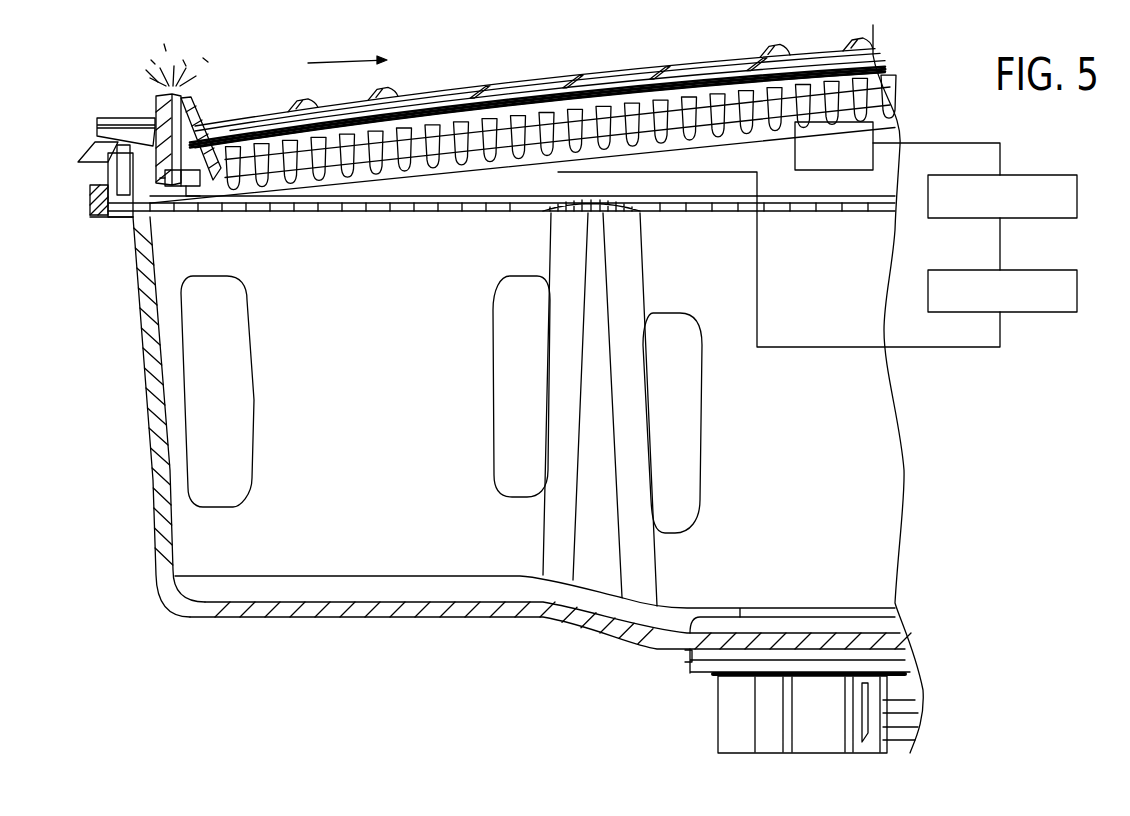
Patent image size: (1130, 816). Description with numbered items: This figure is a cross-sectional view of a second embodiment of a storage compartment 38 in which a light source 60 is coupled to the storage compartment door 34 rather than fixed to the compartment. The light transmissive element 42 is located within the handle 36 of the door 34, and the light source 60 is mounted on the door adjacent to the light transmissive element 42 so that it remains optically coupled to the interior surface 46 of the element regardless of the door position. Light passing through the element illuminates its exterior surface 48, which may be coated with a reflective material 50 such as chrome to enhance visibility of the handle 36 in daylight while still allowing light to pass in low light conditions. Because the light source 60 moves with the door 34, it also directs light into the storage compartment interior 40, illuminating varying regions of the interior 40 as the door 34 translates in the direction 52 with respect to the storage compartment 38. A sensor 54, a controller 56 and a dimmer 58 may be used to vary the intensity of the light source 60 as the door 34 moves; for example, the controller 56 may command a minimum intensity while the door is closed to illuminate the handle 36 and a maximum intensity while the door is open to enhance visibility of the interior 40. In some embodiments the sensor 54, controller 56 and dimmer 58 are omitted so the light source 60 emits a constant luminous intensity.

The storage compartment door 34 is at (430, 127).
The handle 36 is at (192, 100).
The storage compartment 38 is at (534, 52).
The storage compartment interior 40 is at (678, 234).
The light transmissive element 42 is at (168, 107).
The interior surface 46 is at (180, 178).
The exterior surface 48 is at (152, 75).
The reflective material 50 is at (172, 78).
The direction 52 is at (347, 61).
The sensor 54 is at (833, 171).
The controller 56 is at (1080, 195).
The dimmer 58 is at (1080, 290).
The light source 60 is at (190, 187).